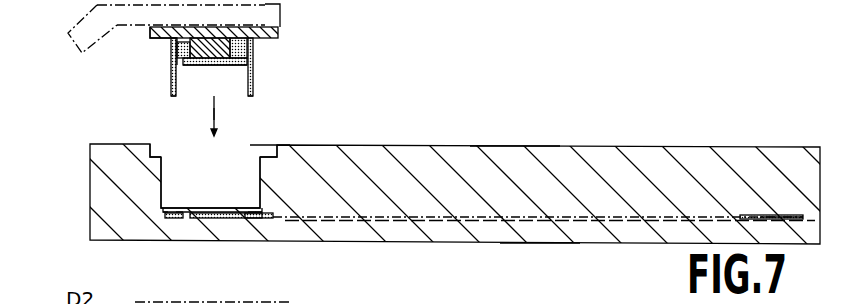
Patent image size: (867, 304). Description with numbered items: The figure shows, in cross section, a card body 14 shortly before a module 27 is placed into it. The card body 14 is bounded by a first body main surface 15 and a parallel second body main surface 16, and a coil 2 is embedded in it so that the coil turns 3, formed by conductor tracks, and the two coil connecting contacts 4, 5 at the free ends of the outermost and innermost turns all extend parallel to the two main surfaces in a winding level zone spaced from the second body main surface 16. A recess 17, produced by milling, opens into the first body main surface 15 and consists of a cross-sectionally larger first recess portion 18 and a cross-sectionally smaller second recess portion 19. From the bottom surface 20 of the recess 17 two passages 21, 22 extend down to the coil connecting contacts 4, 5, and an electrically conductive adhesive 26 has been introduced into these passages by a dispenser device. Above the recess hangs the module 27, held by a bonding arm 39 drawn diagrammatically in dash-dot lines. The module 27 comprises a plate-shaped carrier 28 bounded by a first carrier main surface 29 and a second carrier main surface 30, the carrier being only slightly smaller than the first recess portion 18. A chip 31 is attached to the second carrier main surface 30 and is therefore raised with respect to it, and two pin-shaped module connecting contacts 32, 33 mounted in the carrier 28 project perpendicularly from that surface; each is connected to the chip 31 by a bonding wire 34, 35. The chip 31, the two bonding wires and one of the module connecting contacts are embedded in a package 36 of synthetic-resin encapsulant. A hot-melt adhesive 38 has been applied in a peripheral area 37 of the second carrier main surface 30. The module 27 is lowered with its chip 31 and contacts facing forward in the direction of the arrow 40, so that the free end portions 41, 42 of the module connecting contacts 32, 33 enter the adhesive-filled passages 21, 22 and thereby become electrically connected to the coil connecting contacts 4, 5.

The coil 2 is at (795, 209).
The coil turns 3 is at (192, 213).
The coil connecting contact 4 is at (180, 213).
The coil connecting contact 5 is at (253, 214).
The card body 14 is at (650, 170).
The first body main surface 15 is at (495, 146).
The second body main surface 16 is at (523, 243).
The recess 17 is at (266, 146).
The first recess portion 18 is at (264, 152).
The second recess portion 19 is at (262, 192).
The bottom surface 20 is at (200, 210).
The passage 21 is at (165, 212).
The passage 22 is at (258, 214).
The electrically conductive adhesive 26 is at (176, 210).
The module 27 is at (245, 72).
The plate-shaped carrier 28 is at (278, 33).
The first carrier main surface 29 is at (268, 27).
The second carrier main surface 30 is at (245, 50).
The chip 31 is at (192, 60).
The module connecting contact 32 is at (172, 88).
The module connecting contact 33 is at (253, 80).
The bonding wire 34 is at (181, 66).
The bonding wire 35 is at (236, 63).
The package 36 is at (227, 119).
The peripheral area 37 is at (150, 33).
The hot-melt adhesive 38 is at (166, 45).
The bonding arm 39 is at (97, 8).
The arrow 40 is at (213, 115).
The free end portion 41 is at (172, 97).
The free end portion 42 is at (249, 96).